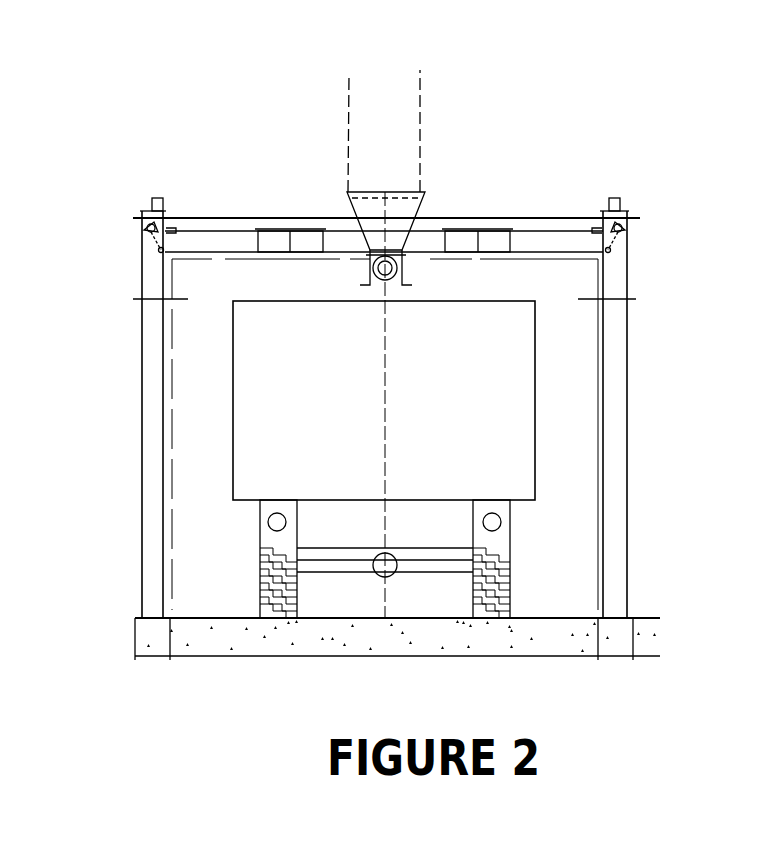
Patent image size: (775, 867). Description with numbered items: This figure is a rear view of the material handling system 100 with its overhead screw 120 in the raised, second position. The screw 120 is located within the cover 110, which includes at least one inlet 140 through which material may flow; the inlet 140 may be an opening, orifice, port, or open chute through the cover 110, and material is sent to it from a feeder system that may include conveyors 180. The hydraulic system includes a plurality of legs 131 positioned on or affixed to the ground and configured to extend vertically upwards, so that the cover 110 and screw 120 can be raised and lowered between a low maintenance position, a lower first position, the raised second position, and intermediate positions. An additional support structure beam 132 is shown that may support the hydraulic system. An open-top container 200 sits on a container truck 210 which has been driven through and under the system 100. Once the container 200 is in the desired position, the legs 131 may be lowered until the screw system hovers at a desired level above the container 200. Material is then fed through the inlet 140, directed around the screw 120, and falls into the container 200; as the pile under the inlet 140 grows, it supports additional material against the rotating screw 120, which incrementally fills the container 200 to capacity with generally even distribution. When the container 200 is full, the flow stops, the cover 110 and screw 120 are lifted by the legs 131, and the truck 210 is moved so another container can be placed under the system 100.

The material handling system 100 is at (498, 206).
The cover 110 is at (367, 280).
The screw 120 is at (368, 260).
The legs 131 is at (157, 375).
The support structure beam 132 is at (227, 243).
The inlet 140 is at (375, 203).
The conveyors 180 is at (558, 617).
The open-top container 200 is at (415, 401).
The container truck 210 is at (352, 528).